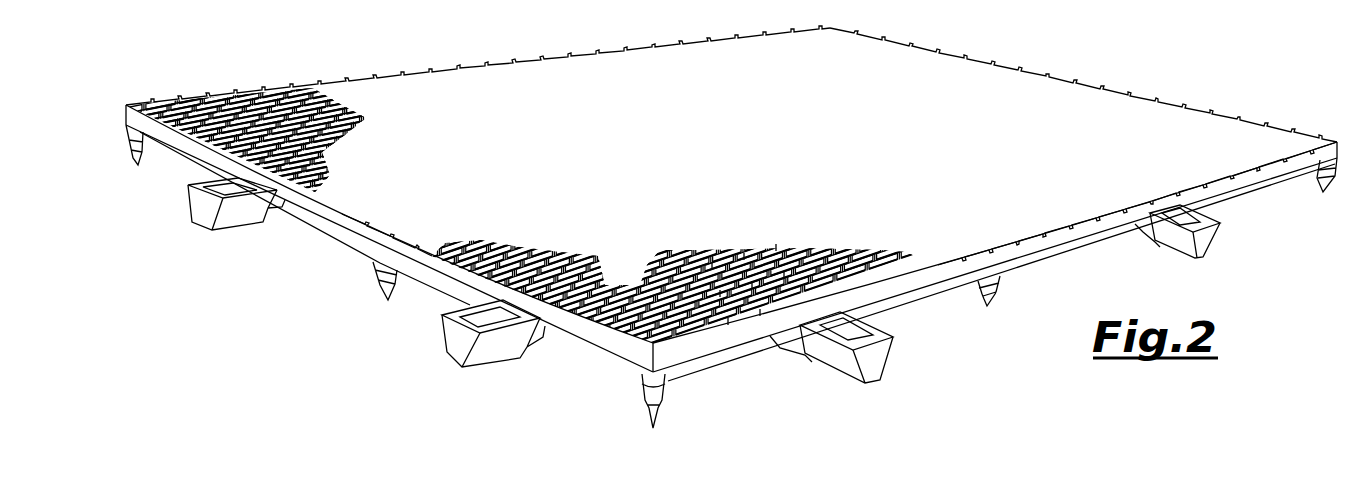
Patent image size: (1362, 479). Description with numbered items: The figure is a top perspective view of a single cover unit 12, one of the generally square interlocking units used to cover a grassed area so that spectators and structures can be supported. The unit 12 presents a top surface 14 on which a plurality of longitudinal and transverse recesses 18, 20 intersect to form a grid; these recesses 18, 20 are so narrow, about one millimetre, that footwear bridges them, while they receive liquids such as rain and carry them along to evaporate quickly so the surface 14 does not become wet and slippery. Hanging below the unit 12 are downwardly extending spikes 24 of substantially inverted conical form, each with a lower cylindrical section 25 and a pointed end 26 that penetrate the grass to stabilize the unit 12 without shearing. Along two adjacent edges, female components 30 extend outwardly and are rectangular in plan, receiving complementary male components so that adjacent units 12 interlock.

The cover unit 12 is at (318, 290).
The top surface 14 is at (731, 184).
The longitudinal recesses 18 is at (642, 355).
The transverse recesses 20 is at (757, 328).
The spike 24 is at (663, 407).
The lower cylindrical section 25 is at (992, 296).
The pointed end 26 is at (993, 306).
The female component 30 is at (880, 360).